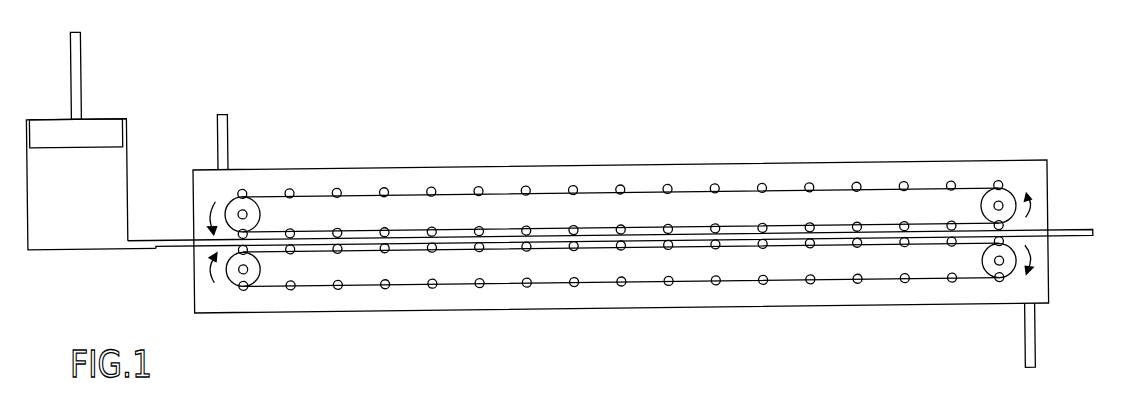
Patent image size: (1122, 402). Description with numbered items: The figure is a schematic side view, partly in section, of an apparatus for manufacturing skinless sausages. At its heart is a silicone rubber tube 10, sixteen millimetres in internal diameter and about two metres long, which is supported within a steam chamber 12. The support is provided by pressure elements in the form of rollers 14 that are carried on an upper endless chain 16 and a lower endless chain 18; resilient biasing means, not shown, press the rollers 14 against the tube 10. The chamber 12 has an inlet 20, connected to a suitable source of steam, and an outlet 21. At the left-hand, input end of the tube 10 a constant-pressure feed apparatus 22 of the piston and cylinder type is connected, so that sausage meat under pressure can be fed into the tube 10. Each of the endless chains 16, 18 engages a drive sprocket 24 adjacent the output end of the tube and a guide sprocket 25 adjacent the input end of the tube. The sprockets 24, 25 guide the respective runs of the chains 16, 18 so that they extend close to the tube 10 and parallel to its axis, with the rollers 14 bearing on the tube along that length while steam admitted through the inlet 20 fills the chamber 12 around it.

The silicone rubber tube 10 is at (1066, 236).
The steam chamber 12 is at (898, 298).
The rollers 14 is at (811, 227).
The upper endless chain 16 is at (883, 190).
The lower endless chain 18 is at (739, 280).
The inlet 20 is at (1028, 368).
The outlet 21 is at (222, 112).
The constant-pressure feed apparatus 22 is at (90, 207).
The drive sprocket 24 is at (1007, 193).
The guide sprocket 25 is at (230, 212).